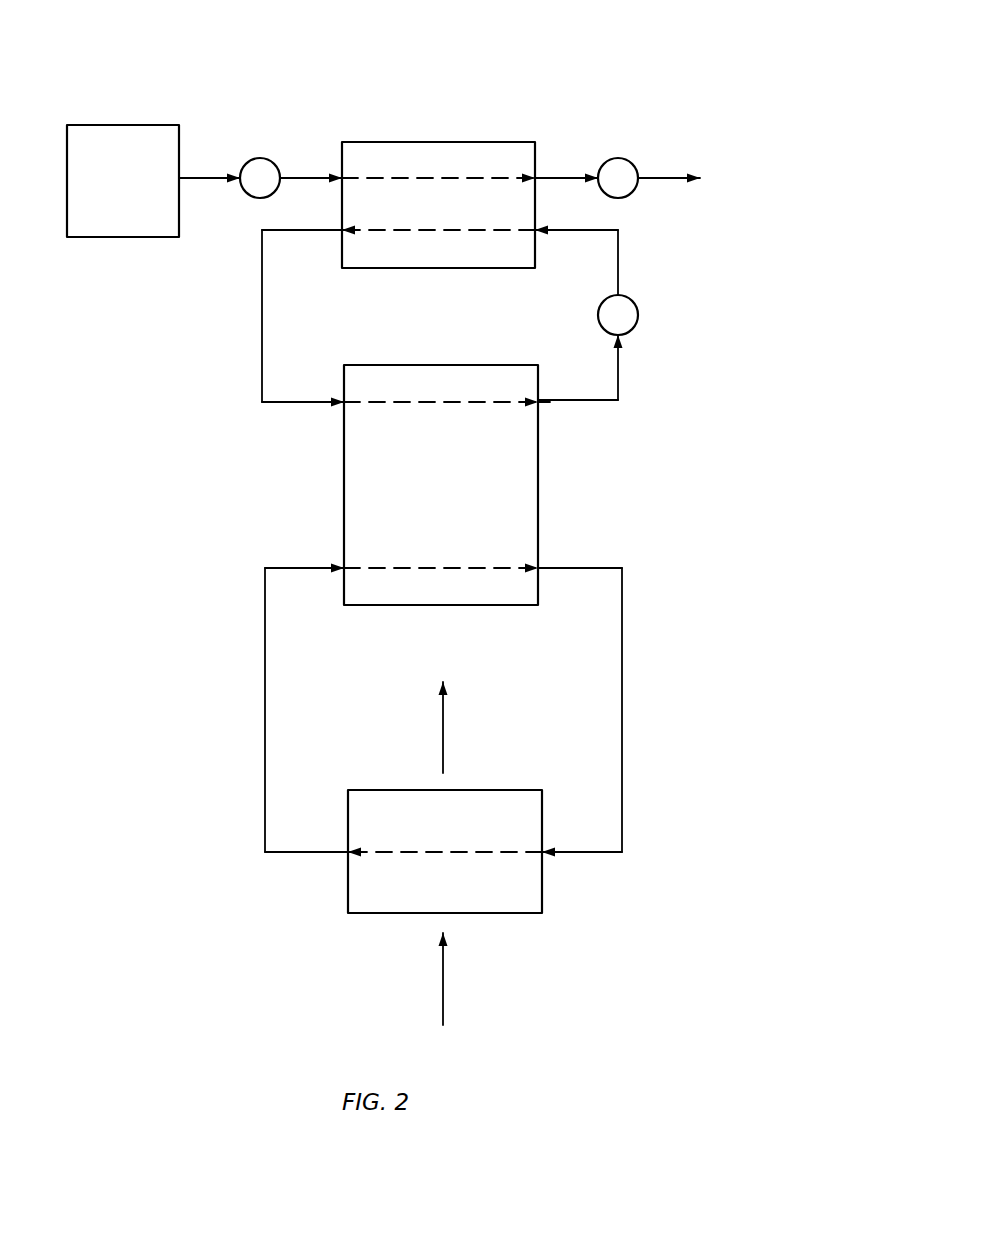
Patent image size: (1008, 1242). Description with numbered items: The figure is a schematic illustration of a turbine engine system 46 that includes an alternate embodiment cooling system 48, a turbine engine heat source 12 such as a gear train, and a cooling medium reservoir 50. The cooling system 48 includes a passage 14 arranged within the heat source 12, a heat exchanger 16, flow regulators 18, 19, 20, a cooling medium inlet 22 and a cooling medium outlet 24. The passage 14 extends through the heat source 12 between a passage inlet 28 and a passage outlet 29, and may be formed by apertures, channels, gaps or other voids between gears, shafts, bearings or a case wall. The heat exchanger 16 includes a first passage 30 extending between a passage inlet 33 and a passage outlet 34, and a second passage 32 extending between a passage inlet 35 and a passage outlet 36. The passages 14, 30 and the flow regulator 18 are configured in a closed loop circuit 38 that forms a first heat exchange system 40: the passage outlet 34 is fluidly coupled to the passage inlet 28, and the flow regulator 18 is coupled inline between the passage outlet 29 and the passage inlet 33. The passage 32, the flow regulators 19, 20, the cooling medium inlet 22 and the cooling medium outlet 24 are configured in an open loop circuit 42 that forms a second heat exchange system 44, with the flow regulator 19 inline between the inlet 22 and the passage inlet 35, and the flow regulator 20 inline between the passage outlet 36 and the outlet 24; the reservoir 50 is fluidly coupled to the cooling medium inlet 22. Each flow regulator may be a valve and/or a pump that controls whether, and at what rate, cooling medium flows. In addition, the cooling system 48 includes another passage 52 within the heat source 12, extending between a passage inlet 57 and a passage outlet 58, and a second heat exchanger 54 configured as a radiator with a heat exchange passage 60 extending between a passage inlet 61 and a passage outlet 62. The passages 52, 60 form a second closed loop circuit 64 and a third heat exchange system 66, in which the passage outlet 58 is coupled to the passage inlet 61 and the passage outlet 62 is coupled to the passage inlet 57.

The turbine engine heat source 12 is at (455, 498).
The passage 14 is at (404, 400).
The heat exchanger 16 is at (369, 141).
The flow regulator 18 is at (640, 315).
The flow regulator 19 is at (259, 158).
The flow regulator 20 is at (618, 158).
The cooling medium inlet 22 is at (201, 176).
The cooling medium outlet 24 is at (675, 176).
The passage inlet 28 is at (342, 400).
The passage outlet 29 is at (540, 400).
The first passage 30 is at (436, 232).
The second passage 32 is at (405, 176).
The passage inlet 33 is at (538, 232).
The passage outlet 34 is at (340, 232).
The passage inlet 35 is at (340, 177).
The passage outlet 36 is at (539, 177).
The closed loop circuit 38 is at (262, 352).
The first heat exchange system 40 is at (240, 320).
The open loop circuit 42 is at (298, 176).
The second heat exchange system 44 is at (478, 100).
The turbine engine system 46 is at (654, 66).
The cooling system 48 is at (146, 498).
The cooling medium reservoir 50 is at (138, 197).
The passage 52 is at (383, 572).
The second heat exchanger 54 is at (505, 789).
The passage inlet 57 is at (342, 566).
The passage outlet 58 is at (542, 566).
The heat exchange passage 60 is at (400, 855).
The passage inlet 61 is at (545, 855).
The passage outlet 62 is at (346, 855).
The second closed loop circuit 64 is at (265, 728).
The third heat exchange system 66 is at (224, 692).